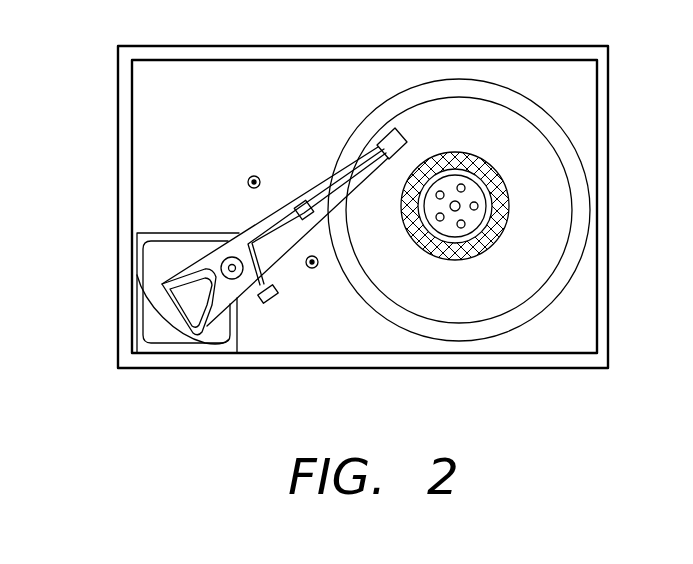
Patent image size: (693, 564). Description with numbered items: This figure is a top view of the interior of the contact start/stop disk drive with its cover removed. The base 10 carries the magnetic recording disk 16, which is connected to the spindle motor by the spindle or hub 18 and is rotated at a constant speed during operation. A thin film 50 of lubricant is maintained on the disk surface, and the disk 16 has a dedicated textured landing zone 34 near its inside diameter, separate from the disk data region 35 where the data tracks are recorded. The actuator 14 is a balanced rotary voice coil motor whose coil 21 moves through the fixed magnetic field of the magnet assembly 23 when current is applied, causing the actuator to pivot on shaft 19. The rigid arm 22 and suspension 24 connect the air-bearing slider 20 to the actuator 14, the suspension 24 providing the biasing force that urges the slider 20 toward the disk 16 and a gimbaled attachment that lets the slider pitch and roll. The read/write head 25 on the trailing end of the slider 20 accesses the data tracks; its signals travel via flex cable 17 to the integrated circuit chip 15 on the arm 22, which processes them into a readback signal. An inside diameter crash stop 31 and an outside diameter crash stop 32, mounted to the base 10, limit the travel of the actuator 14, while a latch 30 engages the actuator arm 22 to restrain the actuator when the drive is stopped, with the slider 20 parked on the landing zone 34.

The base 10 is at (606, 124).
The actuator 14 is at (160, 347).
The integrated circuit chip 15 is at (294, 208).
The magnetic recording disk 16 is at (580, 271).
The flex cable 17 is at (326, 184).
The spindle or hub 18 is at (486, 191).
The shaft 19 is at (228, 258).
The air-bearing slider 20 is at (394, 128).
The coil 21 is at (162, 284).
The rigid arm 22 is at (280, 306).
The magnet assembly 23 is at (175, 316).
The suspension 24 is at (340, 254).
The read/write transducer or head 25 is at (388, 160).
The latch 30 is at (262, 304).
The inside diameter crash stop 31 is at (312, 270).
The outside diameter crash stop 32 is at (248, 182).
The textured landing zone 34 is at (505, 218).
The disk data region 35 is at (492, 128).
The thin film of lubricant 50 is at (474, 149).